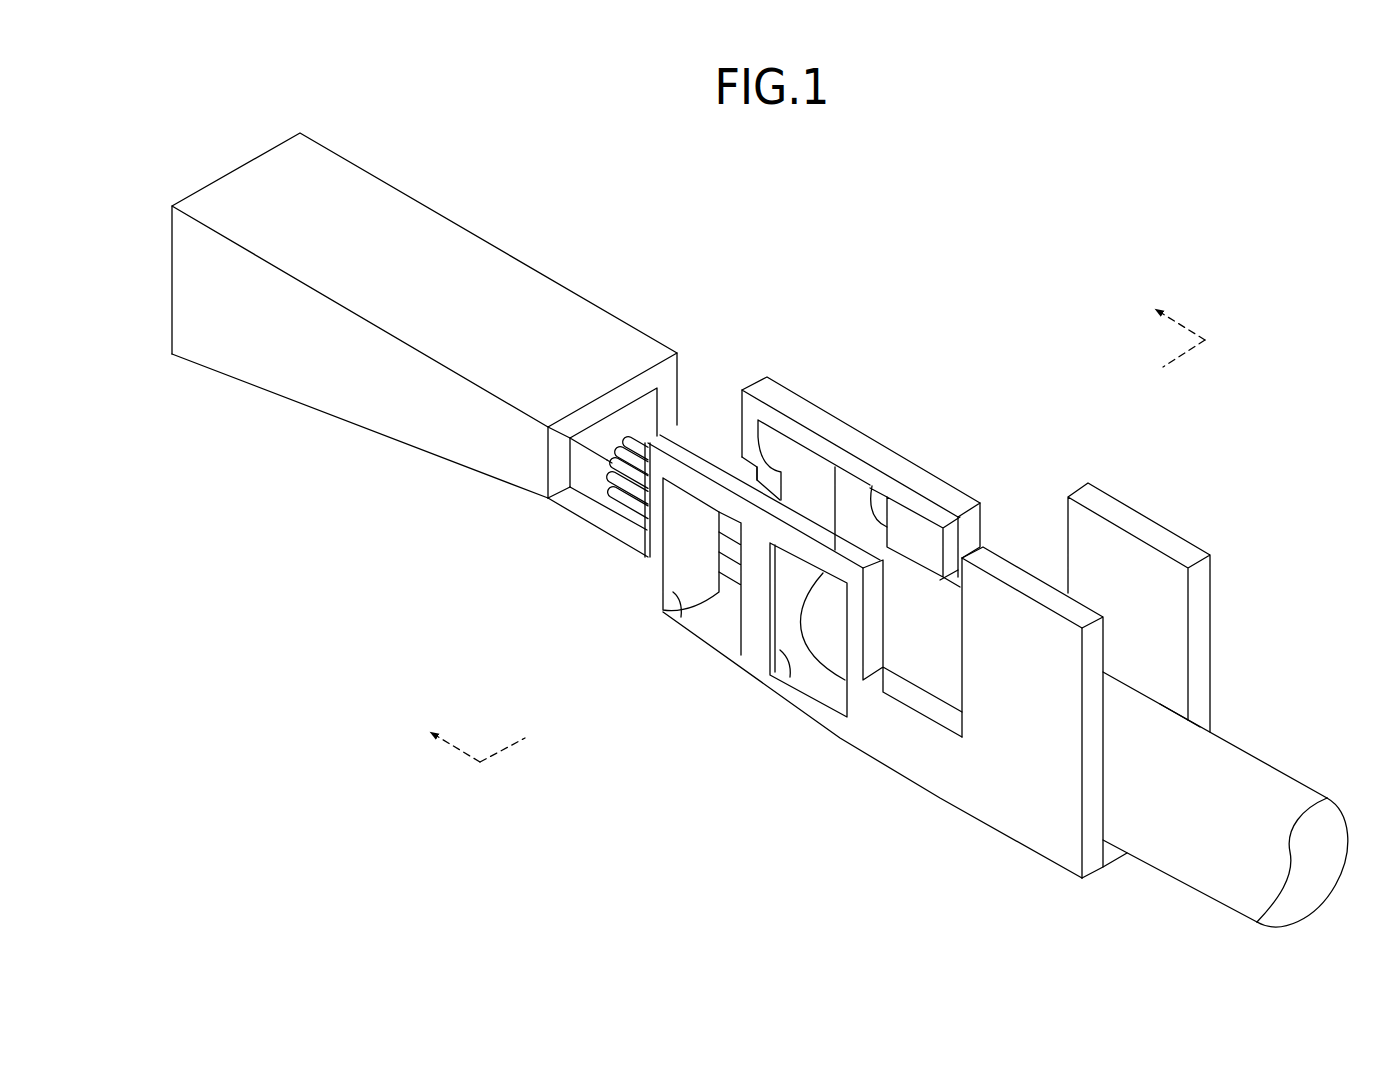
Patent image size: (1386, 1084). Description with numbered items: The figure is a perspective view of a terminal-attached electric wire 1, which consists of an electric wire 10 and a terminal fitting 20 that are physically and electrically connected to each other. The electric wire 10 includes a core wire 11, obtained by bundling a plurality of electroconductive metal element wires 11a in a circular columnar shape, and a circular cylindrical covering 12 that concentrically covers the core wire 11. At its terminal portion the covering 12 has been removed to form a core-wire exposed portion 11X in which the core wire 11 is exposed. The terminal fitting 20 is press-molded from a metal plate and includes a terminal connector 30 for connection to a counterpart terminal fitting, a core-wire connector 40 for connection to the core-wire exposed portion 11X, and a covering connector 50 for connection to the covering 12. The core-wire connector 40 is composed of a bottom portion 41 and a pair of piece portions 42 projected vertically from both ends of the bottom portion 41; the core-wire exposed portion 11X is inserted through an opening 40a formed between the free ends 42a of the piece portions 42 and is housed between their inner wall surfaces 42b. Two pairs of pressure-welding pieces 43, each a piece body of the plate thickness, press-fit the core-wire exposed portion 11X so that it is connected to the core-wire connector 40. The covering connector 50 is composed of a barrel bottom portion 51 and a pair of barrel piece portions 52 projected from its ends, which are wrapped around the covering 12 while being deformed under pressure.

The terminal-attached electric wire 1 is at (850, 198).
The electric wire 10 is at (1305, 642).
The core wire 11 is at (553, 565).
The element wire 11a is at (630, 500).
The core-wire exposed portion 11X is at (598, 485).
The covering 12 is at (1222, 750).
The terminal fitting 20 is at (592, 183).
The terminal connector 30 is at (221, 453).
The core-wire connector 40 is at (655, 667).
The opening 40a is at (745, 392).
The bottom portion 41 is at (800, 690).
The piece portion 42 is at (889, 410).
The free end 42a is at (940, 500).
The inner wall surface 42b is at (722, 458).
The pressure-welding piece 43 is at (790, 470).
The covering connector 50 is at (913, 863).
The barrel bottom portion 51 is at (1008, 803).
The barrel piece portion 52 is at (1100, 497).